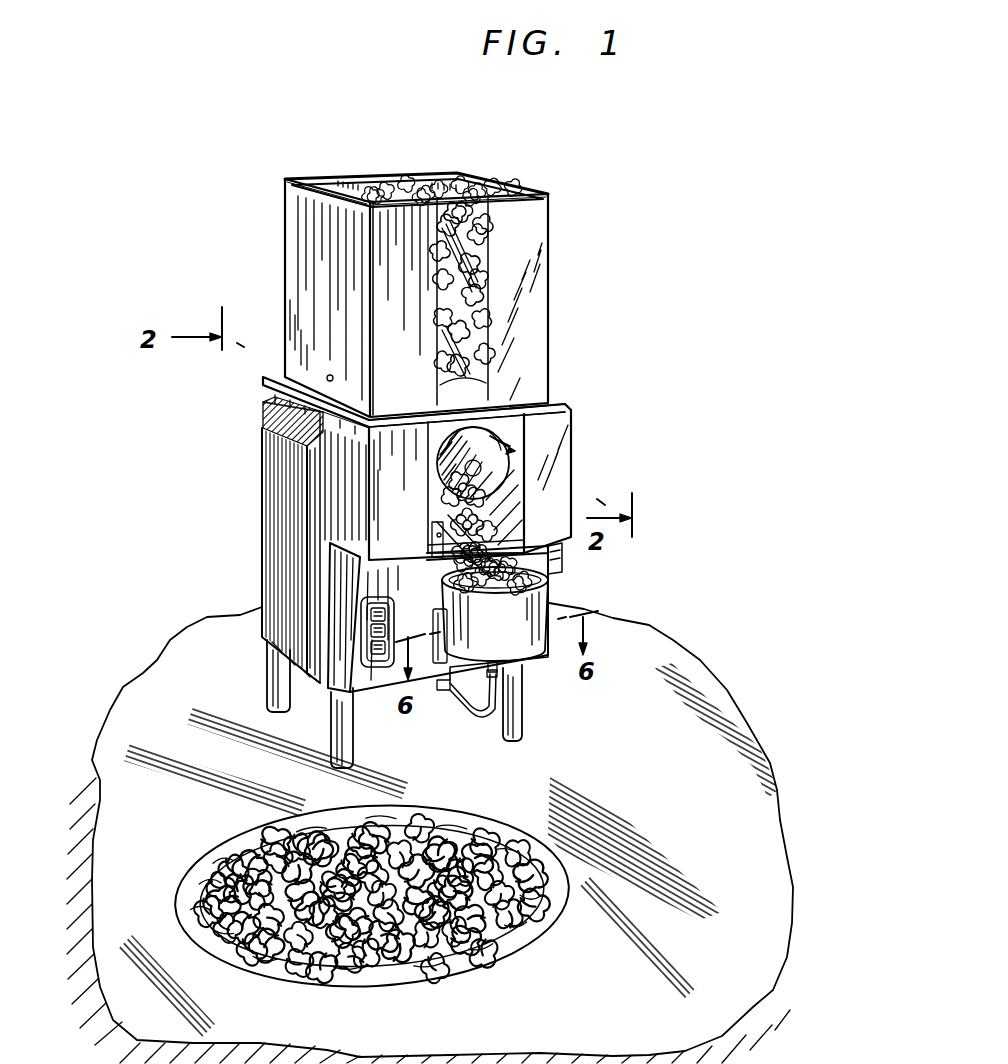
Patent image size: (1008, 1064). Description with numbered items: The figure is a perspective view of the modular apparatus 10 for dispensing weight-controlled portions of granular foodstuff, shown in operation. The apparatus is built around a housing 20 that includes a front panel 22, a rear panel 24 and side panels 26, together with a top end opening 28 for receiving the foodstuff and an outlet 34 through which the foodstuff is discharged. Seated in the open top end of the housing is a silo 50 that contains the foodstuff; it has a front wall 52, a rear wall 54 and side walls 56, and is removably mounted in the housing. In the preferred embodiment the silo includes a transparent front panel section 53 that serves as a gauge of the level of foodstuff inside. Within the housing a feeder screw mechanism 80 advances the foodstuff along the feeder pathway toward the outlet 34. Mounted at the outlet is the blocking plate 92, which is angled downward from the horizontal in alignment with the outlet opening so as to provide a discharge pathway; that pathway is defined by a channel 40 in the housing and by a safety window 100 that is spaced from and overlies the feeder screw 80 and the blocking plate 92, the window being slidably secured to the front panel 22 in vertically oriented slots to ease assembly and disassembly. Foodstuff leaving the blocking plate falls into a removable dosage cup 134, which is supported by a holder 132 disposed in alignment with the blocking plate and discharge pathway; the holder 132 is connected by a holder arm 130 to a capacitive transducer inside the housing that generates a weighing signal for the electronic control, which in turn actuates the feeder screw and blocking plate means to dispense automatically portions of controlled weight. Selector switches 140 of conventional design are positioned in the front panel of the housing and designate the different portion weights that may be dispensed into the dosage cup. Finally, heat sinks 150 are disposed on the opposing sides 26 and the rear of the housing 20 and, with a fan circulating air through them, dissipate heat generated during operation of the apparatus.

The modular apparatus 10 is at (620, 372).
The housing 20 is at (277, 394).
The front panel 22 is at (366, 416).
The rear panel 24 is at (260, 403).
The side panels 26 is at (327, 413).
The top end opening 28 is at (555, 412).
The outlet 34 is at (500, 490).
The channel 40 is at (455, 510).
The silo 50 is at (549, 285).
The front wall 52 is at (535, 327).
The transparent front panel section 53 is at (490, 230).
The rear wall 54 is at (375, 178).
The side walls 56 is at (293, 252).
The feeder screw mechanism 80 is at (508, 449).
The blocking plate 92 is at (470, 541).
The safety window 100 is at (560, 556).
The holder arm 130 is at (480, 720).
The holder 132 is at (438, 692).
The dosage cup 134 is at (513, 642).
The selector switches 140 is at (360, 655).
The heat sinks 150 is at (313, 527).